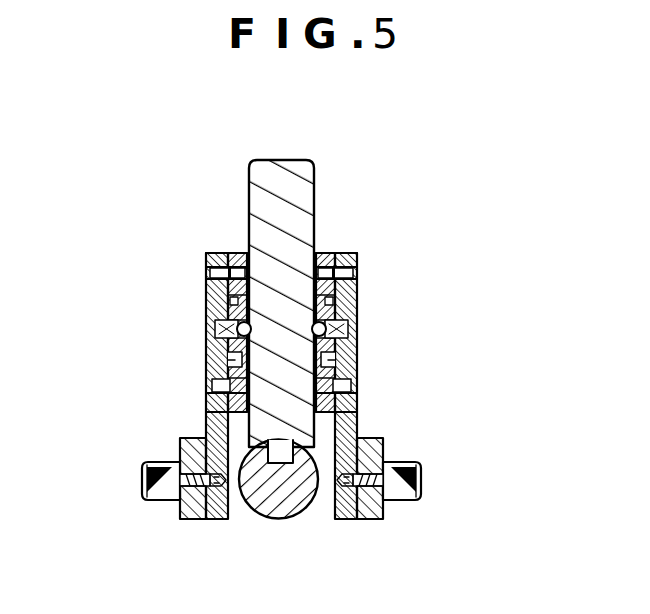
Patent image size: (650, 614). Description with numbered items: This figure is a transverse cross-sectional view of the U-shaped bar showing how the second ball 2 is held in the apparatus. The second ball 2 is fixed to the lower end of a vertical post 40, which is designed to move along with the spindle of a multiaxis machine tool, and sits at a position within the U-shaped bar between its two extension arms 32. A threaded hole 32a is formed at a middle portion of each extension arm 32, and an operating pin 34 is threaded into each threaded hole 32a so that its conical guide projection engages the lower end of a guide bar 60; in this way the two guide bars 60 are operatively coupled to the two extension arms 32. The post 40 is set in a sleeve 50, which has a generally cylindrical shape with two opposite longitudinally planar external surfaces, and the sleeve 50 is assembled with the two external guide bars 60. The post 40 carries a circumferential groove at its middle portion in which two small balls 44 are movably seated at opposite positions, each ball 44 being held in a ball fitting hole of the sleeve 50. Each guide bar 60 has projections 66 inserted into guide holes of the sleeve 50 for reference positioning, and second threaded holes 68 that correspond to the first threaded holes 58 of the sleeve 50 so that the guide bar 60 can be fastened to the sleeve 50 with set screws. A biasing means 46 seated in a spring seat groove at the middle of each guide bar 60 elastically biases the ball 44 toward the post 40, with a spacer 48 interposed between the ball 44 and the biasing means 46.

The second ball 2 is at (278, 518).
The extension arm 32 is at (190, 510).
The threaded hole 32a is at (182, 500).
The operating pin 34 is at (142, 482).
The vertical post 40 is at (300, 173).
The small ball 44 is at (207, 322).
The biasing means 46 is at (357, 325).
The spacer 48 is at (207, 350).
The sleeve 50 is at (234, 240).
The first threaded hole 58 is at (322, 252).
The guide bar 60 is at (206, 412).
The projection 66 is at (357, 360).
The second threaded hole 68 is at (357, 256).